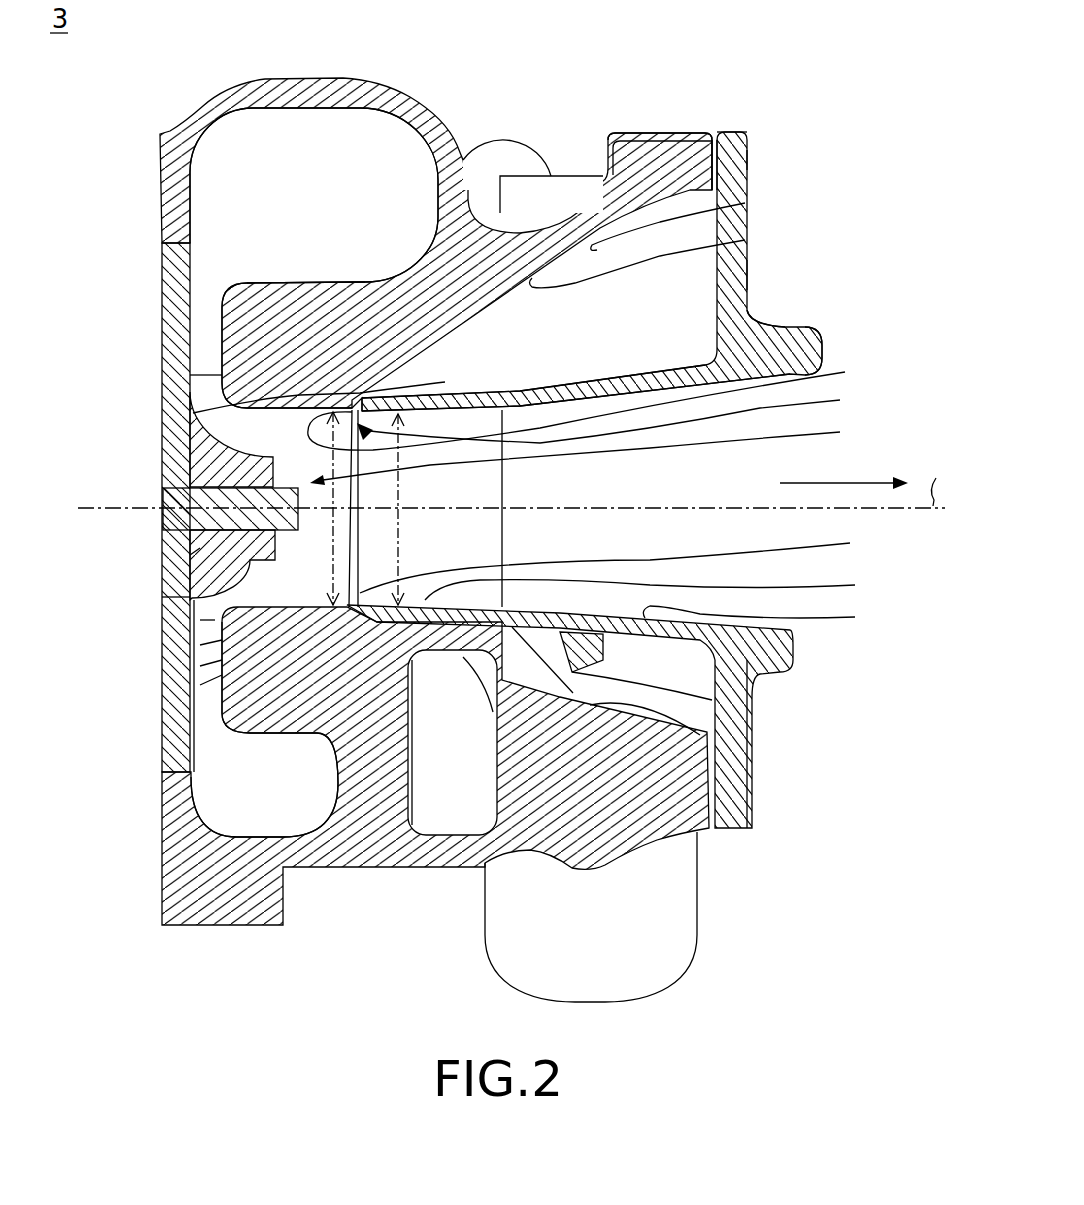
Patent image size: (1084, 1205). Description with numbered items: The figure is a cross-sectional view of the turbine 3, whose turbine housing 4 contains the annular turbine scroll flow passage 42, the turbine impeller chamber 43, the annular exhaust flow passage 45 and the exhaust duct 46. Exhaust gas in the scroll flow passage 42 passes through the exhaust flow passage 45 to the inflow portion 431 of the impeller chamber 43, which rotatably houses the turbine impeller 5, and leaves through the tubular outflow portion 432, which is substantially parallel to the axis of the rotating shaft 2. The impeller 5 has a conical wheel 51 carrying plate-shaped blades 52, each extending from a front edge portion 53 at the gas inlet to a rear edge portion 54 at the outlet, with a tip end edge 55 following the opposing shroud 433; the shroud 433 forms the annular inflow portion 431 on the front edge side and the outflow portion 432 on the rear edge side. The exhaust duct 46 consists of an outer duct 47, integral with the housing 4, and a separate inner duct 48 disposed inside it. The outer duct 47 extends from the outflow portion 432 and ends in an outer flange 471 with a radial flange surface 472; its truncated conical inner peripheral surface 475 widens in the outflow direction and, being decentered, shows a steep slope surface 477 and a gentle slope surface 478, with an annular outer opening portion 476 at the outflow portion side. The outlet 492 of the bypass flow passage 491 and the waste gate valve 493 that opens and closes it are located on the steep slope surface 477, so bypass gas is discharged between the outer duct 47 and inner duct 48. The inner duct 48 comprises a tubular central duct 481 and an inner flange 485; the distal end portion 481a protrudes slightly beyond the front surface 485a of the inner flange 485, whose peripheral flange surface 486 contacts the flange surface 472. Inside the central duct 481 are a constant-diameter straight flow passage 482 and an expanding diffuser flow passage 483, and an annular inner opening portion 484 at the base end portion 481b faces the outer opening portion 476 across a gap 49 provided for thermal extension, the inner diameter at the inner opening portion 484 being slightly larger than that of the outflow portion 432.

The turbine 3 is at (512, 508).
The rotating shaft 2 is at (163, 516).
The turbine housing 4 is at (400, 100).
The turbine impeller 5 is at (125, 470).
The turbine scroll flow passage 42 is at (277, 122).
The turbine impeller chamber 43 is at (840, 432).
The exhaust flow passage 45 is at (200, 328).
The exhaust duct 46 is at (795, 95).
The outer duct 47 is at (545, 230).
The inner duct 48 is at (740, 140).
The gap 49 is at (845, 372).
The wheel 51 is at (190, 555).
The blades 52 is at (200, 620).
The front edge portion 53 is at (200, 645).
The rear edge portion 54 is at (200, 685).
The tip end edge 55 is at (200, 666).
The inflow portion 431 is at (200, 368).
The outflow portion 432 is at (840, 400).
The shroud 433 is at (194, 598).
The outer flange 471 is at (636, 143).
The flange surface 472 is at (733, 170).
The inner peripheral surface 475 is at (745, 203).
The outer opening portion 476 is at (850, 543).
The steep slope surface 477 is at (744, 745).
The gentle slope surface 478 is at (745, 240).
The central duct 481 is at (577, 385).
The distal end portion 481a is at (820, 352).
The base end portion 481b is at (445, 382).
The straight flow passage 482 is at (855, 585).
The diffuser flow passage 483 is at (855, 617).
The inner opening portion 484 is at (193, 413).
The inner flange 485 is at (750, 272).
The front surface 485a is at (750, 315).
The flange surface 486 is at (713, 188).
The bypass flow passage 491 is at (423, 817).
The outlet 492 is at (497, 735).
The waste gate valve 493 is at (705, 680).